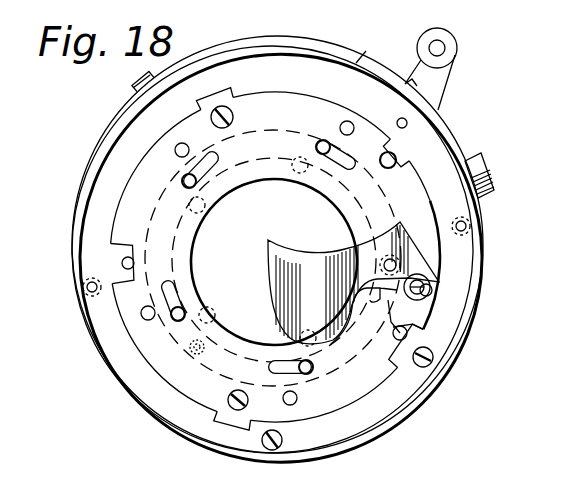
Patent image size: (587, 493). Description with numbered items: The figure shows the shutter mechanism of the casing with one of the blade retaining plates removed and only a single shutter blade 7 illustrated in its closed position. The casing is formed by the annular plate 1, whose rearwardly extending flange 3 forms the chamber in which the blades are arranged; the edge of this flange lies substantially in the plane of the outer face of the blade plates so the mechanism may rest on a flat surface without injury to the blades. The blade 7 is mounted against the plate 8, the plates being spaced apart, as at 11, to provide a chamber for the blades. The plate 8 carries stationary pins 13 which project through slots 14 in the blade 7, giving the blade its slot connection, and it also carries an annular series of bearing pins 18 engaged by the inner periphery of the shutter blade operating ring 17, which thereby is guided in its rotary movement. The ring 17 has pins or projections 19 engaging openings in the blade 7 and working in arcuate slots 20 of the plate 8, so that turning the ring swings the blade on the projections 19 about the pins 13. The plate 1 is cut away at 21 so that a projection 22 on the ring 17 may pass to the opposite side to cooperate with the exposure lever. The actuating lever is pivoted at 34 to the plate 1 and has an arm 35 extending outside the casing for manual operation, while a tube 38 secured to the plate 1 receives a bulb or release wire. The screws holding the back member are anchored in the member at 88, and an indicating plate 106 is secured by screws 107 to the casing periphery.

The annular plate 1 is at (100, 200).
The rearwardly extending flange 3 is at (73, 240).
The shutter blades 7 is at (272, 285).
The plate 8 is at (125, 307).
The spacing of the plates 11 is at (281, 273).
The pins 13 is at (432, 284).
The slots 14 is at (440, 294).
The shutter blade operating ring 17 is at (196, 358).
The bearing pins 18 is at (205, 303).
The pins or projections 19 is at (185, 179).
The arcuate slots 20 is at (186, 188).
The cut-away 21 is at (394, 156).
The projection 22 is at (198, 357).
The pivot 34 is at (407, 123).
The arm 35 is at (453, 62).
The tube 38 is at (492, 187).
The anchorage 88 is at (470, 227).
The plate 106 is at (373, 48).
The screws 107 is at (131, 84).